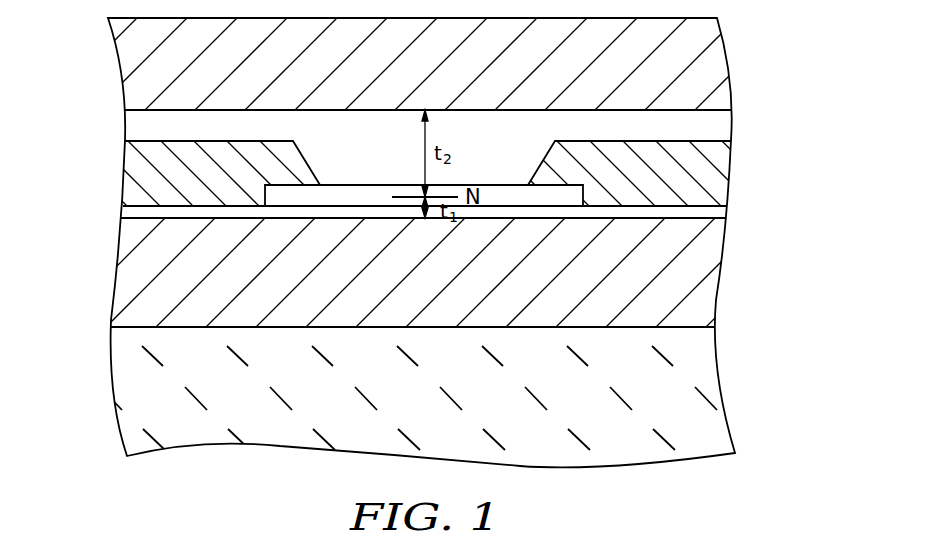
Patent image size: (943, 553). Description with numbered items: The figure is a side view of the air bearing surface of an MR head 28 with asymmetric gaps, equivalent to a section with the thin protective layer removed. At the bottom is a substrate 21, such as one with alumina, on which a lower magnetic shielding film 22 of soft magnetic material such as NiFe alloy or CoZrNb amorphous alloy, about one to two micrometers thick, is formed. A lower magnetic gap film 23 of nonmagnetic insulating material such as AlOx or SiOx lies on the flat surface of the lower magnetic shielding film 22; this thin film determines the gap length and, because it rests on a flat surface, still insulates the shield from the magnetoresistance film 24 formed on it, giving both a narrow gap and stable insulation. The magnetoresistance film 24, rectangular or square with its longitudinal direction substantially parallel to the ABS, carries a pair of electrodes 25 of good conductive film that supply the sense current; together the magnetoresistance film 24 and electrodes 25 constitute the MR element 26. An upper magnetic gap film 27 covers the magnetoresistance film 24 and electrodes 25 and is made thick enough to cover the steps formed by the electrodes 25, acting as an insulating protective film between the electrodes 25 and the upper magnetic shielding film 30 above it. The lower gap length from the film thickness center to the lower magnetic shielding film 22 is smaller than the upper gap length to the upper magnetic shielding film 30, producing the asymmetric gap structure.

The substrate 21 is at (710, 408).
The lower magnetic shielding film 22 is at (707, 308).
The lower magnetic gap film 23 is at (715, 212).
The magnetoresistance film 24 is at (552, 200).
The electrodes 25 is at (133, 182).
The MR element 26 is at (799, 140).
The upper magnetic gap film 27 is at (723, 128).
The MR head 28 is at (850, 18).
The upper magnetic shielding film 30 is at (121, 40).